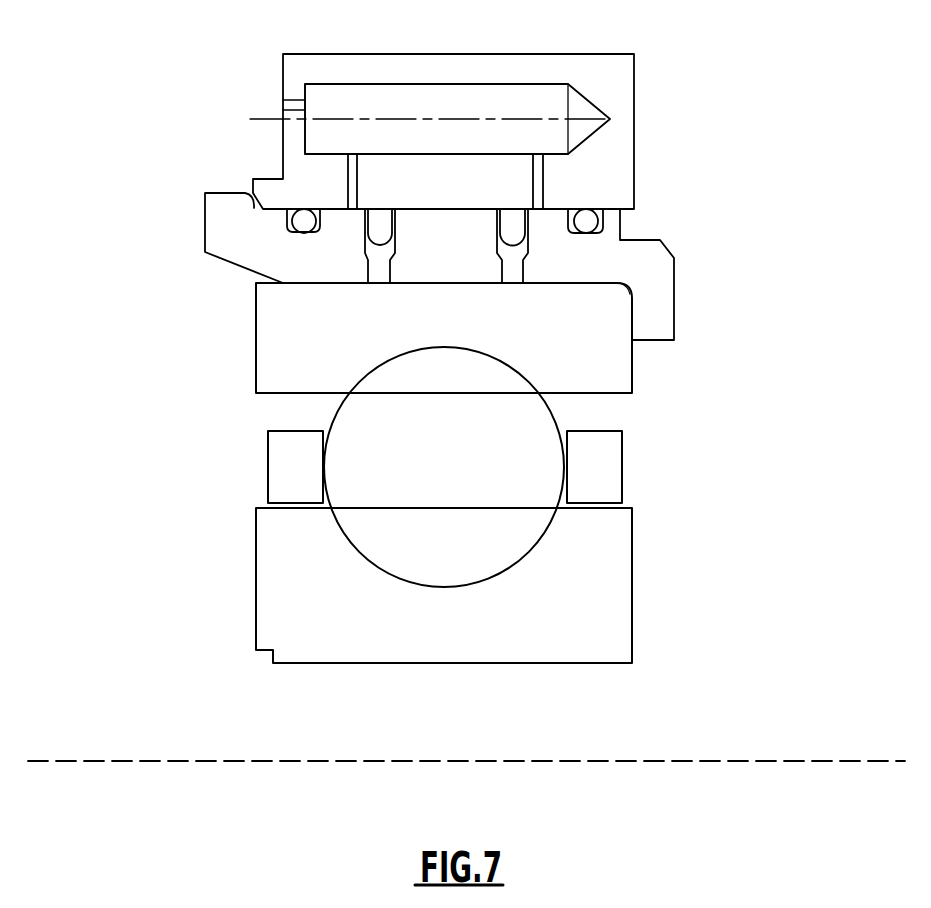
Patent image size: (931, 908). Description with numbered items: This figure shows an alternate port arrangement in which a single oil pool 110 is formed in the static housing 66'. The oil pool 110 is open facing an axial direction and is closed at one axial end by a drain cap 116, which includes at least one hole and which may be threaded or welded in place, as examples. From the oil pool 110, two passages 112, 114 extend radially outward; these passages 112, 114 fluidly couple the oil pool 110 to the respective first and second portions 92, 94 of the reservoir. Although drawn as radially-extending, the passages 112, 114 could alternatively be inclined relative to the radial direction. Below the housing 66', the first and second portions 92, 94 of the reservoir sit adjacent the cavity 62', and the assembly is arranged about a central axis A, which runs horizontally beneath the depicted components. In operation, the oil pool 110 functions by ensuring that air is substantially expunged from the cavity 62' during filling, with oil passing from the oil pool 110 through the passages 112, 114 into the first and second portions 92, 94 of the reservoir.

The oil pool 110 is at (468, 95).
The static housing 66' is at (484, 131).
The drain cap 116 is at (293, 136).
The passage 112 is at (348, 180).
The passage 114 is at (543, 183).
The first portion of the reservoir 92 is at (340, 210).
The second portion of the reservoir 94 is at (550, 210).
The cavity 62' is at (444, 301).
The axis A is at (152, 762).